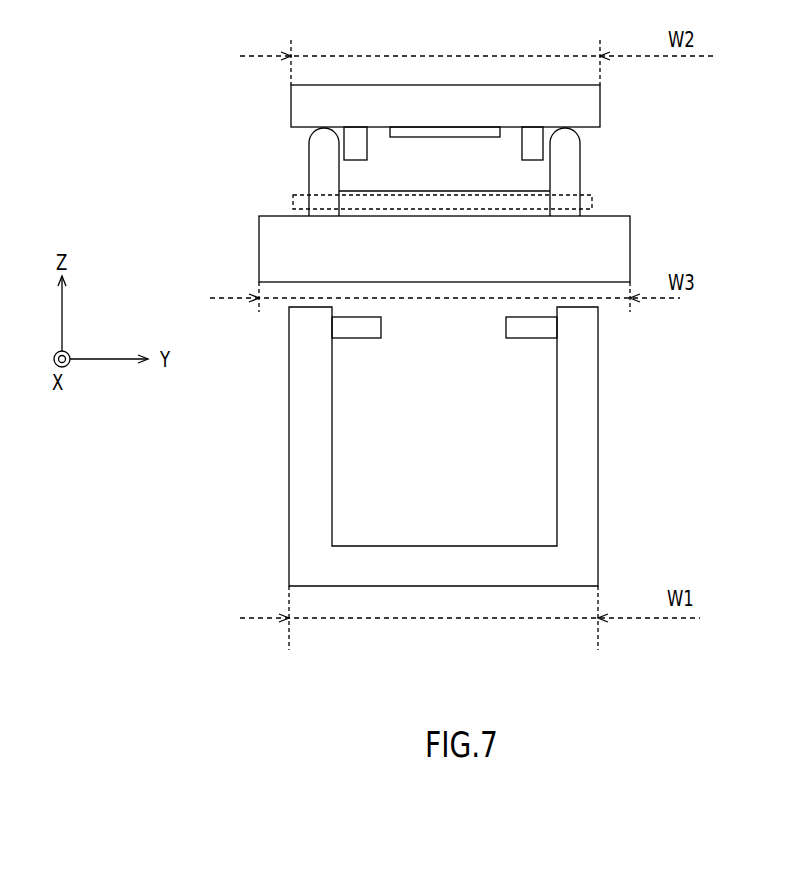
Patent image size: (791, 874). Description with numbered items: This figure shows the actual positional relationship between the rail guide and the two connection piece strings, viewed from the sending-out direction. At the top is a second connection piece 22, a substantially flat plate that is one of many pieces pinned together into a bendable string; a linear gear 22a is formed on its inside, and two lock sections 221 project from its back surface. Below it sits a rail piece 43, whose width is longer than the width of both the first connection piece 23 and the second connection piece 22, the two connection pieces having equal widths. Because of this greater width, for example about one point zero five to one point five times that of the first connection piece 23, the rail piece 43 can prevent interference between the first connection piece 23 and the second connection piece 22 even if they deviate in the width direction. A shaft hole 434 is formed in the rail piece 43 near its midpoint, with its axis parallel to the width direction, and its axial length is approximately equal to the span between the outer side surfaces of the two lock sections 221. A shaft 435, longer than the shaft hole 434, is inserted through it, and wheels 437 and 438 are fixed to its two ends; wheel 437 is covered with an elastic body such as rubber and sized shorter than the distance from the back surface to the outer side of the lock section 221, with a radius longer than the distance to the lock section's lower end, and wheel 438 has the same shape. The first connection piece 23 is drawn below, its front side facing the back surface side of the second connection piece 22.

The second connection piece 22 is at (630, 104).
The lock section 221 is at (353, 128).
The linear gear 22a is at (455, 137).
The wheel 437 is at (310, 144).
The wheel 438 is at (580, 141).
The shaft hole 434 is at (437, 191).
The shaft 435 is at (295, 200).
The rail piece 43 is at (630, 205).
The first connection piece 23 is at (598, 516).